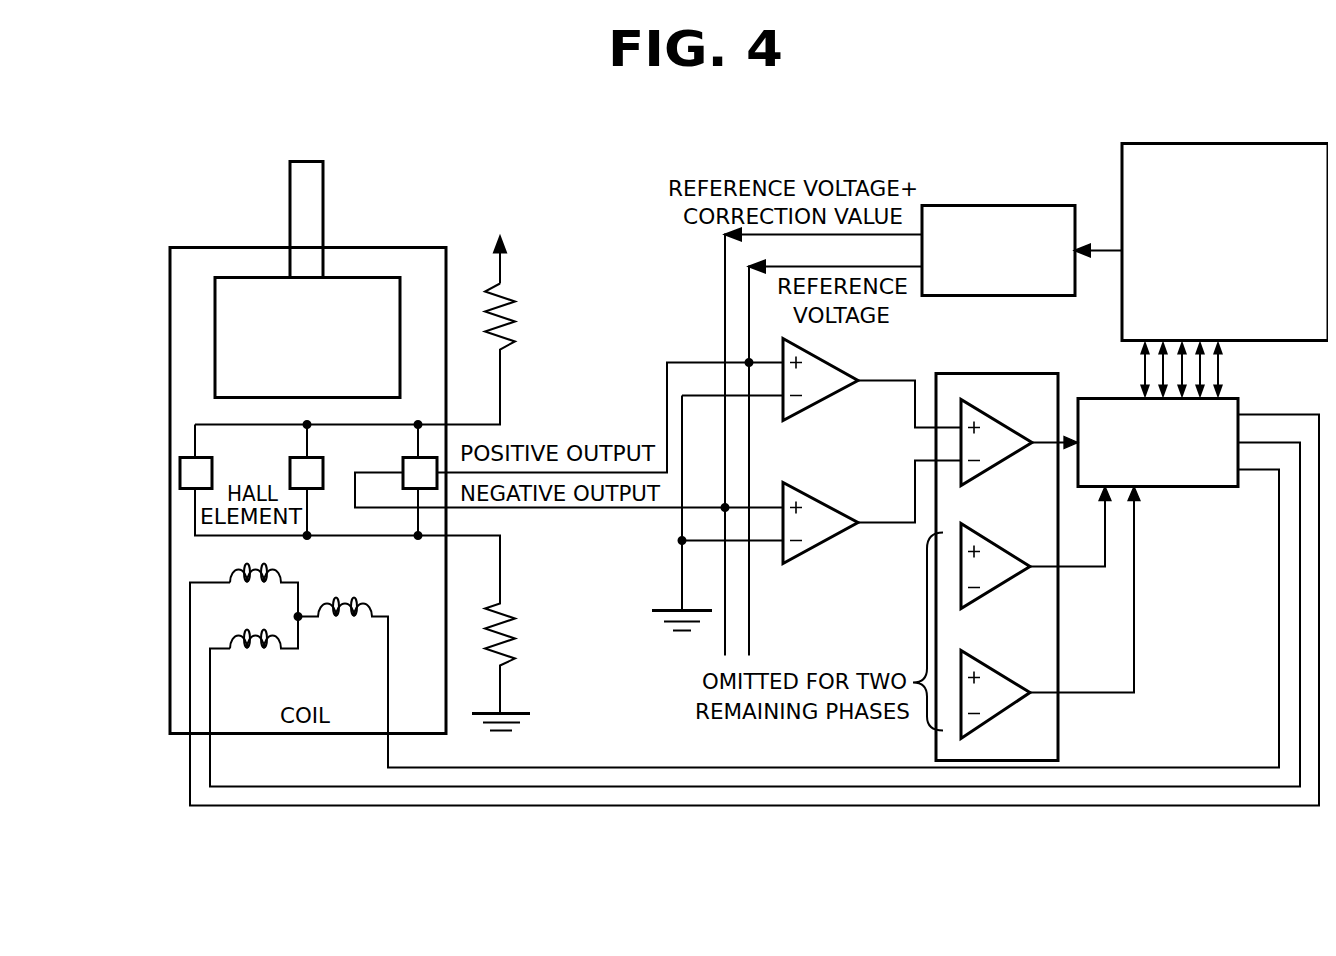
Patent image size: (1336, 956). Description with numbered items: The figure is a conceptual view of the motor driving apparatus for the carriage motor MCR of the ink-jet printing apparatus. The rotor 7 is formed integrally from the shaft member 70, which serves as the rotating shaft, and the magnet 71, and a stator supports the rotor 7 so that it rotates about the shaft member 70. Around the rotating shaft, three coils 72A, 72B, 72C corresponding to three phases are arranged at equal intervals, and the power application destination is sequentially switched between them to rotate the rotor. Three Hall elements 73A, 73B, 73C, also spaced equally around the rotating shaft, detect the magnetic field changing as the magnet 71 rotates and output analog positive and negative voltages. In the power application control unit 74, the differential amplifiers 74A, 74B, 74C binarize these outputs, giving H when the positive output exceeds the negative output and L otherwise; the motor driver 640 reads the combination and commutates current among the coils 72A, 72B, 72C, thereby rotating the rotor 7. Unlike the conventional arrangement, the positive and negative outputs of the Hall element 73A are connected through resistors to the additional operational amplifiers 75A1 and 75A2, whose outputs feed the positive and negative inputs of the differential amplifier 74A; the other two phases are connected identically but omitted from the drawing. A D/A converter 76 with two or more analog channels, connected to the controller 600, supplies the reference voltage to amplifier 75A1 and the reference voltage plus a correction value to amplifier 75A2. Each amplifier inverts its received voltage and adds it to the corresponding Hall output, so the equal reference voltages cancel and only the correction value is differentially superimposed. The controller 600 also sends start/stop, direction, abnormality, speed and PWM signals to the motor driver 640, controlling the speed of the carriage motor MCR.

The rotor 7 is at (165, 160).
The carriage motor MCR is at (168, 403).
The shaft member 70 is at (304, 161).
The magnet 71 is at (370, 277).
The coil 72A is at (228, 566).
The coil 72B is at (255, 648).
The coil 72C is at (343, 616).
The Hall element 73A is at (418, 488).
The Hall element 73B is at (309, 488).
The Hall element 73C is at (180, 466).
The power application control unit 74 is at (993, 373).
The differential amplifier 74A is at (1020, 408).
The differential amplifier 74B is at (1023, 533).
The differential amplifier 74C is at (1023, 660).
The additional operational amplifier 75A1 is at (810, 408).
The additional operational amplifier 75A2 is at (810, 550).
The D/A converter 76 is at (1034, 205).
The controller 600 is at (1225, 143).
The motor driver 640 is at (1206, 486).